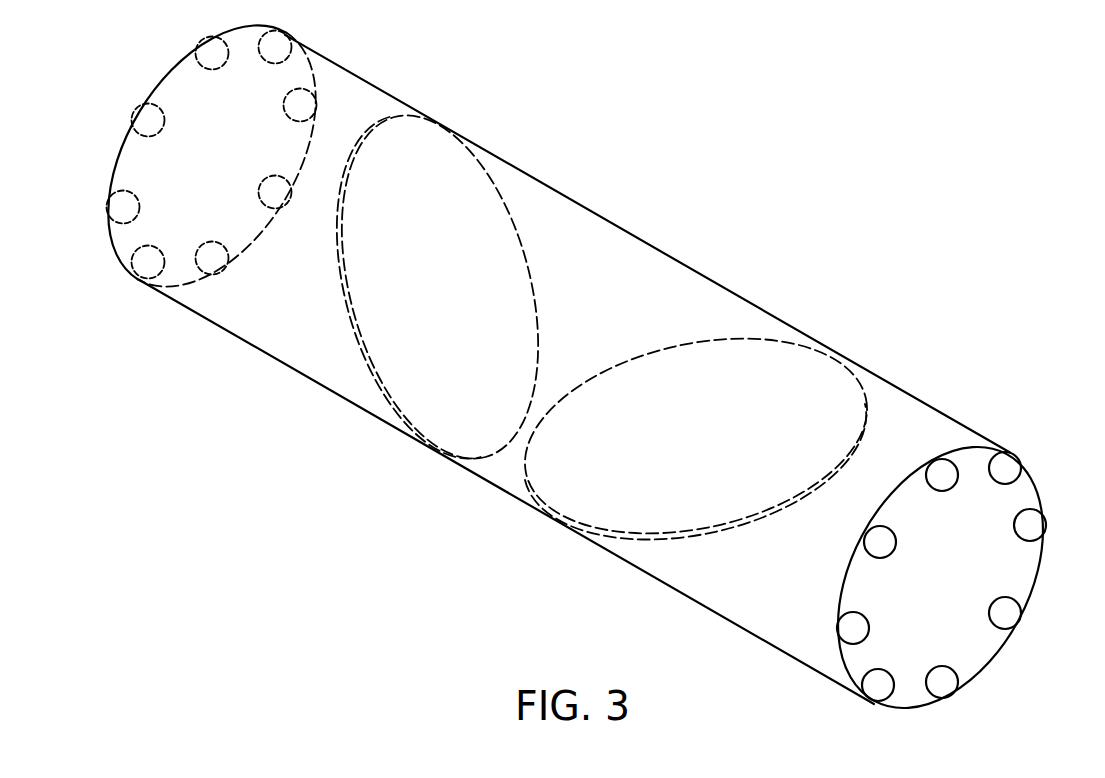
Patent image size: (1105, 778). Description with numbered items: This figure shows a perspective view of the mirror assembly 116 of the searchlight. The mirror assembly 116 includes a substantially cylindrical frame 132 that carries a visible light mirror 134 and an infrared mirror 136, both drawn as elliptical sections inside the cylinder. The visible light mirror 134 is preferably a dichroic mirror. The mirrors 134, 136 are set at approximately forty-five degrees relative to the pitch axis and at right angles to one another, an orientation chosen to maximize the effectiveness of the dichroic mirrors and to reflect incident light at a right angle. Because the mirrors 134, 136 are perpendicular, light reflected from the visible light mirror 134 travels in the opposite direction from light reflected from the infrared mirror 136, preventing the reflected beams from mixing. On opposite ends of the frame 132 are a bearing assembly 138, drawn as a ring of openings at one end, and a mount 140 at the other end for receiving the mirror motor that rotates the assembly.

The mirror assembly 116 is at (790, 230).
The substantially cylindrical frame 132 is at (615, 222).
The visible light mirror 134 is at (418, 390).
The infrared mirror 136 is at (576, 494).
The bearing assembly 138 is at (140, 118).
The mount 140 is at (1022, 616).